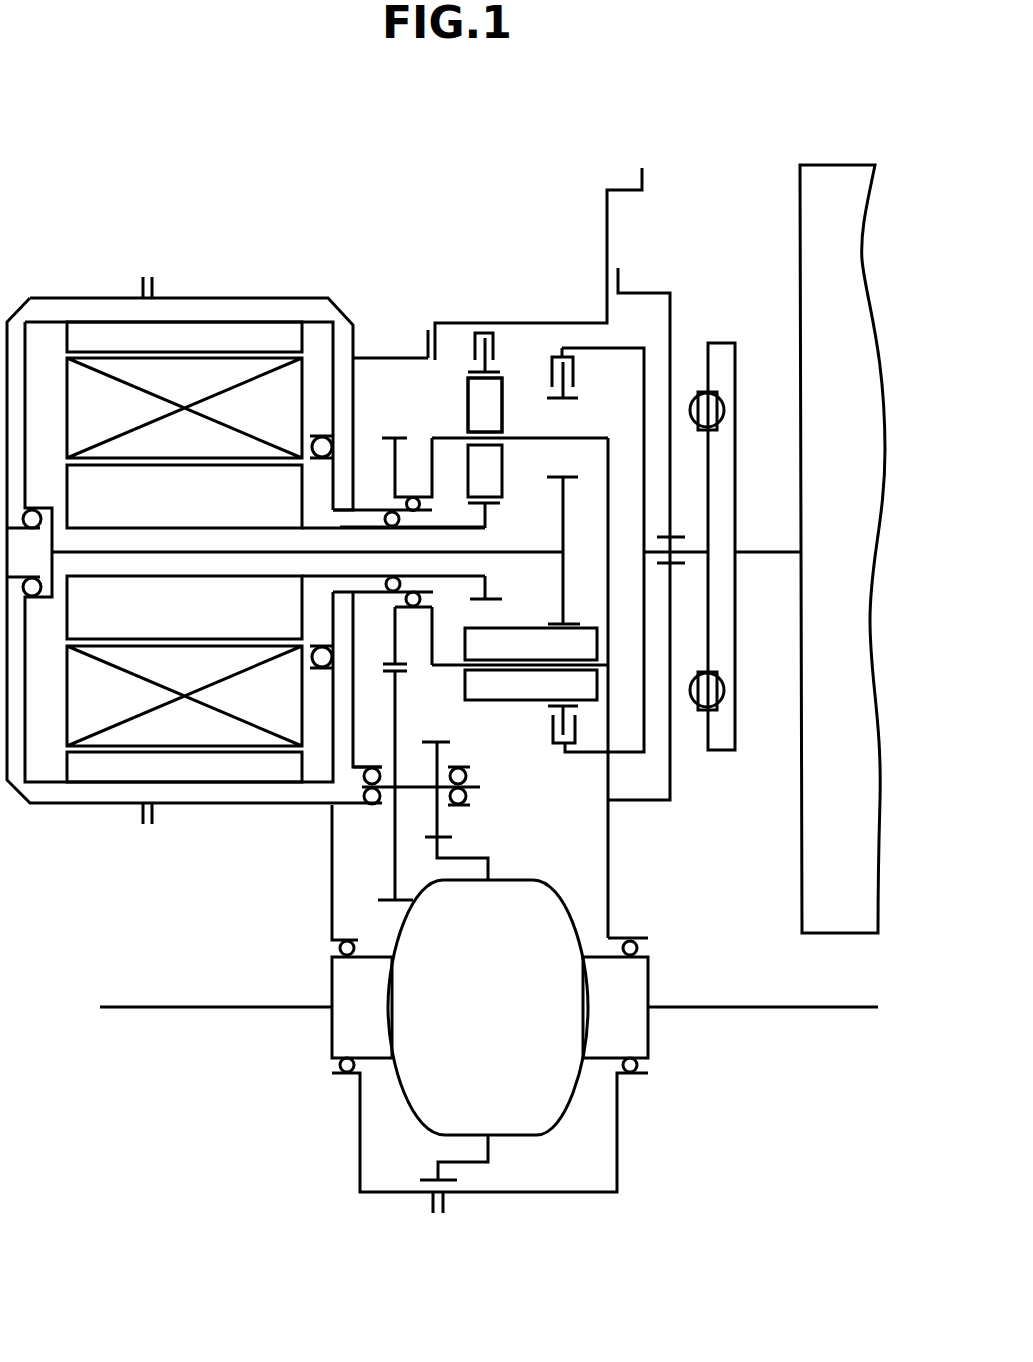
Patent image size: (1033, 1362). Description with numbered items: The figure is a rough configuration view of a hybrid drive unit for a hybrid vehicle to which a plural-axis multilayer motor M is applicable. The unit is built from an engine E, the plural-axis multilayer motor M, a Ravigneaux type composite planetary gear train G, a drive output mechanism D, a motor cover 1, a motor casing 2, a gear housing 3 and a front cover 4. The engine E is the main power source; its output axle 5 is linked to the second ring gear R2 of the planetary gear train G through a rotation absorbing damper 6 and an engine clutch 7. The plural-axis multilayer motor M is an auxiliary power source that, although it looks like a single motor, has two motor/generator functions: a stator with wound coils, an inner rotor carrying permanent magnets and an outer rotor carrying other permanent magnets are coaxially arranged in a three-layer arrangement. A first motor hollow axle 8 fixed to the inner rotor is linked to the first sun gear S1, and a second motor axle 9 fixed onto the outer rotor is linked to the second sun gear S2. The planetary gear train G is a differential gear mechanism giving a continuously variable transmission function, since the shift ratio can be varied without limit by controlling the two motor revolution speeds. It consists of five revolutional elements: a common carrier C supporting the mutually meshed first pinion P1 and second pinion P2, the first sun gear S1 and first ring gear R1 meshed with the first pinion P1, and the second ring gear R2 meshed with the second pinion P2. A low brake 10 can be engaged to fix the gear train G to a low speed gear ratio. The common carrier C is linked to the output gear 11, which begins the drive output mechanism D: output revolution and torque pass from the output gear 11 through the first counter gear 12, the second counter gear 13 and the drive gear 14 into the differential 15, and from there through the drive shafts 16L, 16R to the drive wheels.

The motor cover 1 is at (98, 298).
The motor casing 2 is at (285, 298).
The plural-axis multilayer motor M is at (213, 302).
The gear housing 3 is at (582, 323).
The front cover 4 is at (670, 305).
The output axle 5 is at (767, 554).
The rotation absorbing damper 6 is at (705, 390).
The engine clutch 7 is at (573, 373).
The first motor hollow axle 8 is at (532, 550).
The second motor axle 9 is at (455, 528).
The low brake 10 is at (475, 333).
The output gear 11 is at (383, 437).
The first counter gear 12 is at (397, 692).
The second counter gear 13 is at (427, 743).
The drive gear 14 is at (447, 838).
The differential 15 is at (488, 1030).
The drive shaft 16L is at (207, 1007).
The drive shaft 16R is at (748, 1007).
The Ravigneaux type composite planetary gear train G is at (513, 352).
The first ring gear R1 is at (468, 396).
The first pinion P1 is at (502, 408).
The first sun gear S1 is at (492, 600).
The second ring gear R2 is at (578, 406).
The second pinion P2 is at (507, 702).
The second sun gear S2 is at (573, 477).
The common carrier C is at (600, 642).
The drive output mechanism D is at (368, 862).
The engine E is at (825, 165).